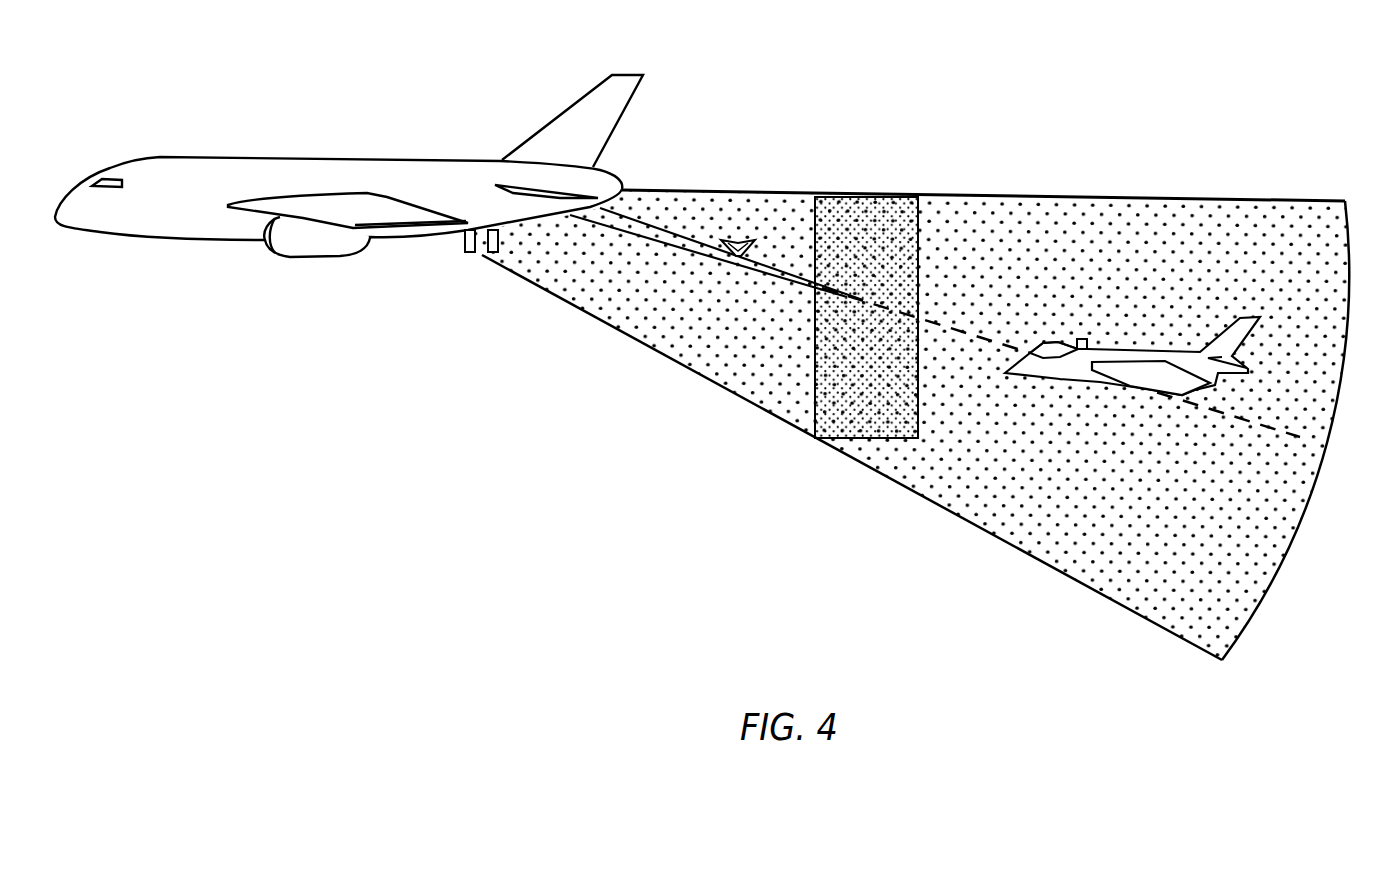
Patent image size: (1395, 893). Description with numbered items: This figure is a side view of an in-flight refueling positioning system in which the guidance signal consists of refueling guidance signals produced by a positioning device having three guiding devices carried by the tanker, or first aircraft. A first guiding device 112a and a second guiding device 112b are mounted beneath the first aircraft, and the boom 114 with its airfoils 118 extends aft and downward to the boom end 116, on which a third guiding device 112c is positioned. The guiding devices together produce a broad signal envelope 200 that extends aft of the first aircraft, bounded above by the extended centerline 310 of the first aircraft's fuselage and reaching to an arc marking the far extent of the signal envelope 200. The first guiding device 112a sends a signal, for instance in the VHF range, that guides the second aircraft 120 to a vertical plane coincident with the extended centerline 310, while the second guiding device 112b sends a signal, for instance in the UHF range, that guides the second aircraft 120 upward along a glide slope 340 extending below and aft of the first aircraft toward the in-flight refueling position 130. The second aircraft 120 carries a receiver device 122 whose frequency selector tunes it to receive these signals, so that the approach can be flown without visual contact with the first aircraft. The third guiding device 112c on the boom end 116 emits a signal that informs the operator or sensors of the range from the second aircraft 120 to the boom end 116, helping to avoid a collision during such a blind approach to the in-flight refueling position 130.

The first guiding device 112a is at (468, 258).
The second guiding device 112b is at (497, 258).
The third guiding device 112c is at (848, 302).
The boom 114 is at (663, 251).
The boom end 116 is at (788, 341).
The airfoils 118 is at (743, 235).
The second aircraft 120 is at (1115, 402).
The receiver device 122 is at (1083, 334).
The in-flight refueling position 130 is at (875, 454).
The signal envelope 200 is at (1329, 508).
The extended centerline 310 is at (1010, 192).
The glide slope 340 is at (1267, 436).